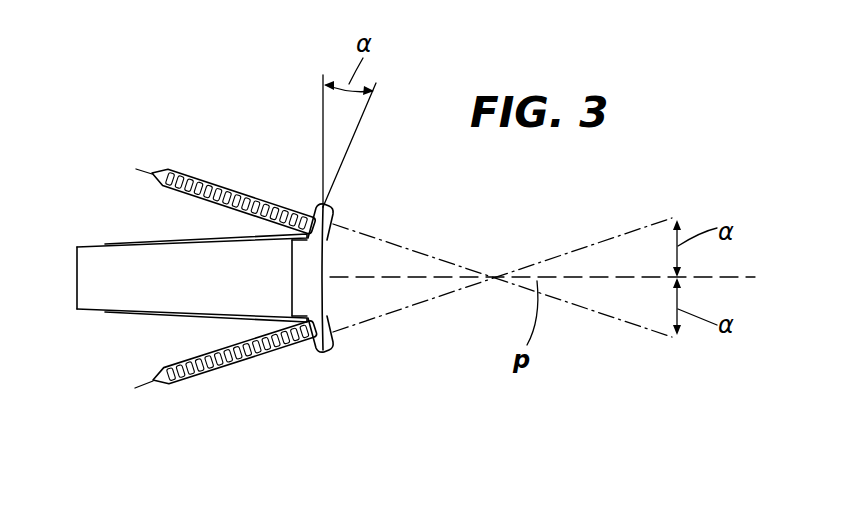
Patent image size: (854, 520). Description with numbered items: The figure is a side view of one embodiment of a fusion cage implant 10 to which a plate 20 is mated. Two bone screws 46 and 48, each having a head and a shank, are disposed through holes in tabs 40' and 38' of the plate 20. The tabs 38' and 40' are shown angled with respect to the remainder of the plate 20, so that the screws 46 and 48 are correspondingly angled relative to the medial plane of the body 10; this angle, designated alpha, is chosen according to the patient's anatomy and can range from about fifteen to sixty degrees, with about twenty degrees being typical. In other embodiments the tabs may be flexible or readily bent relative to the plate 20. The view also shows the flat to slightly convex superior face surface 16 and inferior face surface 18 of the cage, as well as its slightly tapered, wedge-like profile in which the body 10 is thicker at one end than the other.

The implant 10 is at (126, 347).
The superior face surface 16 is at (165, 237).
The inferior face surface 18 is at (118, 315).
The plate 20 is at (312, 284).
The tab 40' is at (297, 190).
The tab 38' is at (311, 374).
The bone screw 46 is at (229, 184).
The bone screw 48 is at (172, 389).